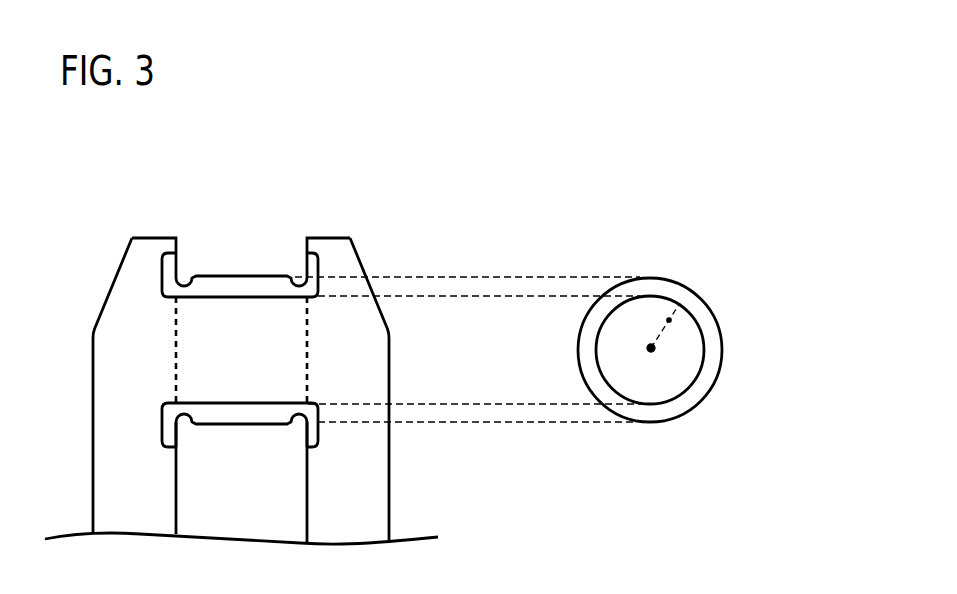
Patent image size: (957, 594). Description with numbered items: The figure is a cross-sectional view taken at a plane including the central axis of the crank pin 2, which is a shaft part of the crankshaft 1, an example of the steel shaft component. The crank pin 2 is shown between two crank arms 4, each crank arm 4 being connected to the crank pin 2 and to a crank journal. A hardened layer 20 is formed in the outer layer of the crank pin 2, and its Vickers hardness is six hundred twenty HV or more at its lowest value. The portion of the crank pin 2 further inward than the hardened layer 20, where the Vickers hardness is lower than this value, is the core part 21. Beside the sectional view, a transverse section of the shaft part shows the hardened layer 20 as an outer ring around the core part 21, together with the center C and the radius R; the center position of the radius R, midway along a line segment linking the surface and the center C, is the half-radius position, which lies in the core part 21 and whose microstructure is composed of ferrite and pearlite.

The crankshaft 1 is at (251, 165).
The crank pin 2 is at (282, 353).
The crank arm 4 is at (143, 250).
The hardened layer 20 is at (238, 290).
The core part 21 is at (210, 390).
The center C is at (655, 348).
The radius R is at (663, 325).